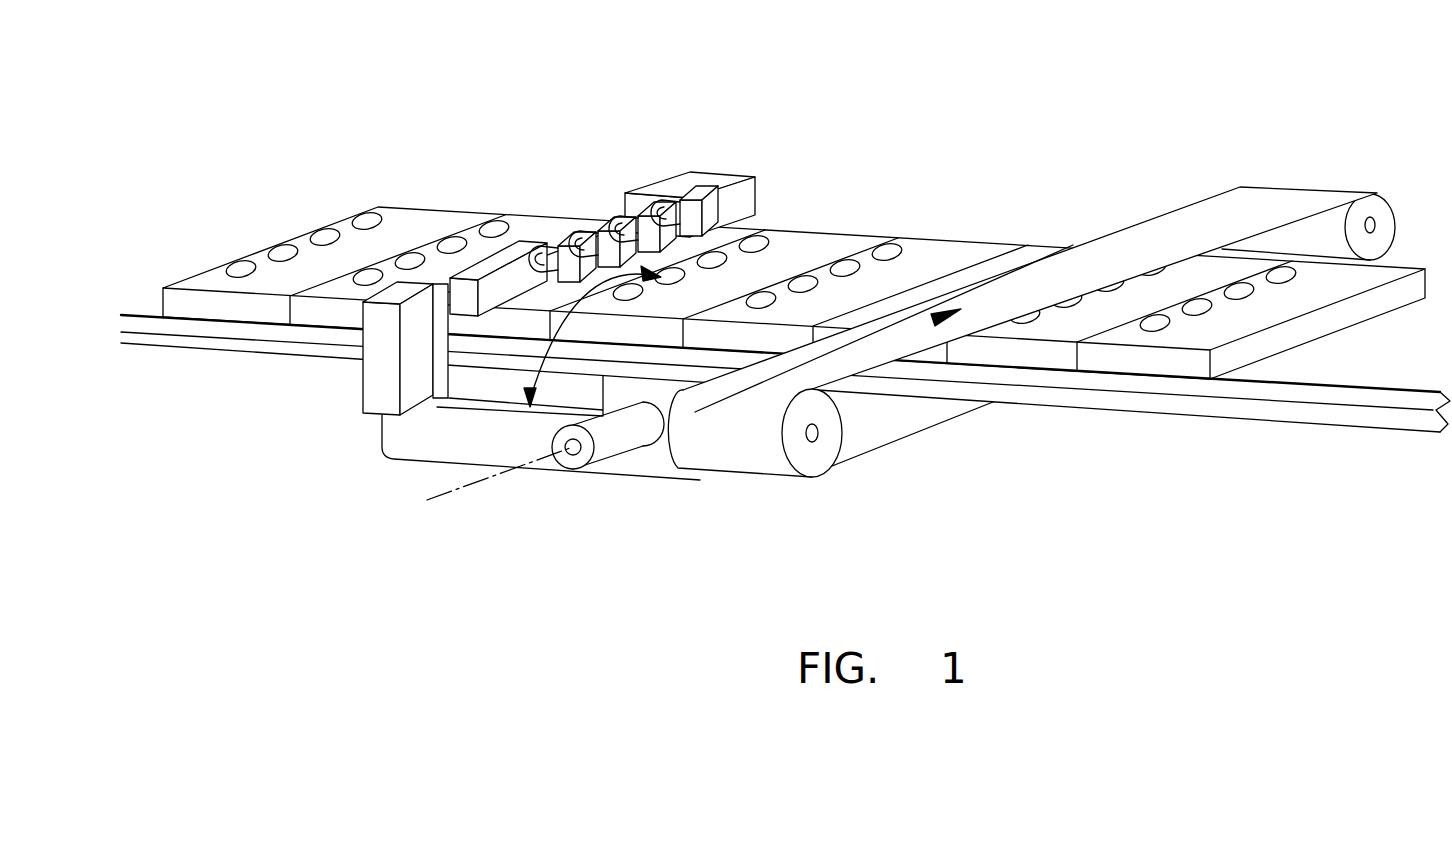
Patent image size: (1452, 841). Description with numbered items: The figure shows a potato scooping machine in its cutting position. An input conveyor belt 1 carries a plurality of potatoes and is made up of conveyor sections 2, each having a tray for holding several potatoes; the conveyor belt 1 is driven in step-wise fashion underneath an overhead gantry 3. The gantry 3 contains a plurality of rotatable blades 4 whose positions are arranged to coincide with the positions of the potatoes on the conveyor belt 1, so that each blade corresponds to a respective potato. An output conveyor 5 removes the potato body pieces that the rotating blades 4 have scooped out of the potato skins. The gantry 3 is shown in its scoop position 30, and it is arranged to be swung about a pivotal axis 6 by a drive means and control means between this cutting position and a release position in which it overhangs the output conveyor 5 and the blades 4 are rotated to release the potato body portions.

The input conveyor belt 1 is at (238, 345).
The conveyor sections 2 is at (936, 249).
The overhead gantry 3 is at (478, 265).
The rotatable blades 4 is at (675, 200).
The output conveyor 5 is at (1183, 225).
The pivotal axis 6 is at (497, 470).
The scoop position 30 is at (382, 342).